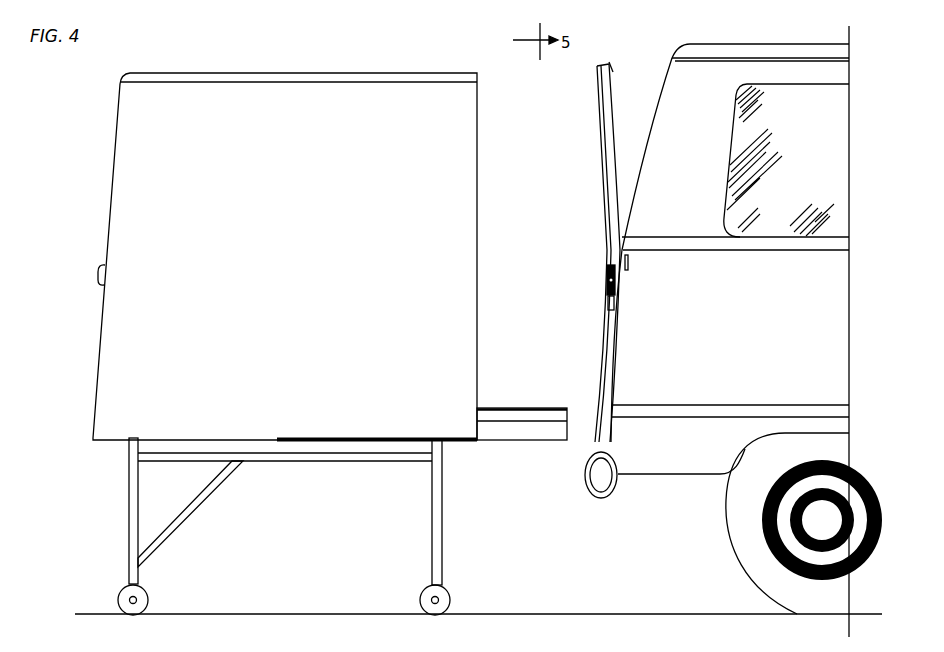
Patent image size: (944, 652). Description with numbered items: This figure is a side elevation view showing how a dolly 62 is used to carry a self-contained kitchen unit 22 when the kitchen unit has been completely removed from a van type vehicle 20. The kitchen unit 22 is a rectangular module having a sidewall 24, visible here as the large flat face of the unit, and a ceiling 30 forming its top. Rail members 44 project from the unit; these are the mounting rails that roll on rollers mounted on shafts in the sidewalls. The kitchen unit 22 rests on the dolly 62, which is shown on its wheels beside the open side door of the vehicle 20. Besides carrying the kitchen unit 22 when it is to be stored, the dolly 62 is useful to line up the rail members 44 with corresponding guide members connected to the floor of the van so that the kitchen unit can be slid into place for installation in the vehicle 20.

The van type vehicle 20 is at (746, 45).
The kitchen unit 22 is at (285, 238).
The sidewall 24 is at (279, 267).
The ceiling 30 is at (238, 76).
The rail member 44 is at (511, 413).
The dolly 62 is at (444, 532).